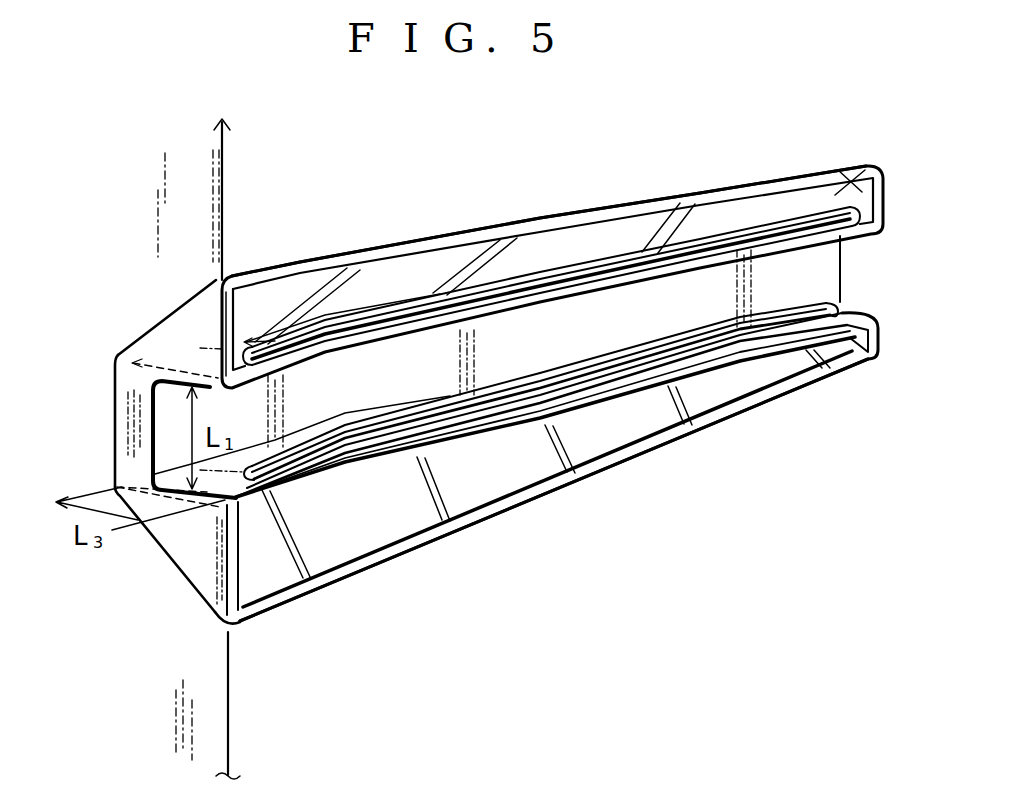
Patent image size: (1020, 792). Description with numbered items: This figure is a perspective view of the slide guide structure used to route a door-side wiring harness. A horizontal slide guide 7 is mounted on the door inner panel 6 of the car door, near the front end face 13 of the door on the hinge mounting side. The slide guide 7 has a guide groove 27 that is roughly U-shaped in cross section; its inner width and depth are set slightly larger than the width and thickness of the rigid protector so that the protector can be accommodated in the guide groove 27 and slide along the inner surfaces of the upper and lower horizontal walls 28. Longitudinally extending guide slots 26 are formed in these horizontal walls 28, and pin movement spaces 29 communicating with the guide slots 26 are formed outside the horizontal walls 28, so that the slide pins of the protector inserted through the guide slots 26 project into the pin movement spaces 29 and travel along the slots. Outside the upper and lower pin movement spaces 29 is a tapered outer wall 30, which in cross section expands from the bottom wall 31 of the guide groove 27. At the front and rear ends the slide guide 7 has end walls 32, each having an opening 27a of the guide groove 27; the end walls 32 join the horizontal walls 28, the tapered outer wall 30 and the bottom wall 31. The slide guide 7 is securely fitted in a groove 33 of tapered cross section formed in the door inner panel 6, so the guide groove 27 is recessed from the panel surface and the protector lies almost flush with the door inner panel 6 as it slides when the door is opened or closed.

The door inner panel 6 is at (237, 213).
The slide guide 7 is at (370, 594).
The front end face 13 is at (212, 665).
The guide slots 26 is at (335, 340).
The guide groove 27 is at (292, 428).
The opening 27a is at (150, 437).
The horizontal walls 28 is at (633, 285).
The pin movement spaces 29 is at (592, 452).
The tapered outer wall 30 is at (645, 201).
The bottom wall 31 is at (118, 414).
The end walls 32 is at (858, 186).
The groove 33 is at (157, 550).